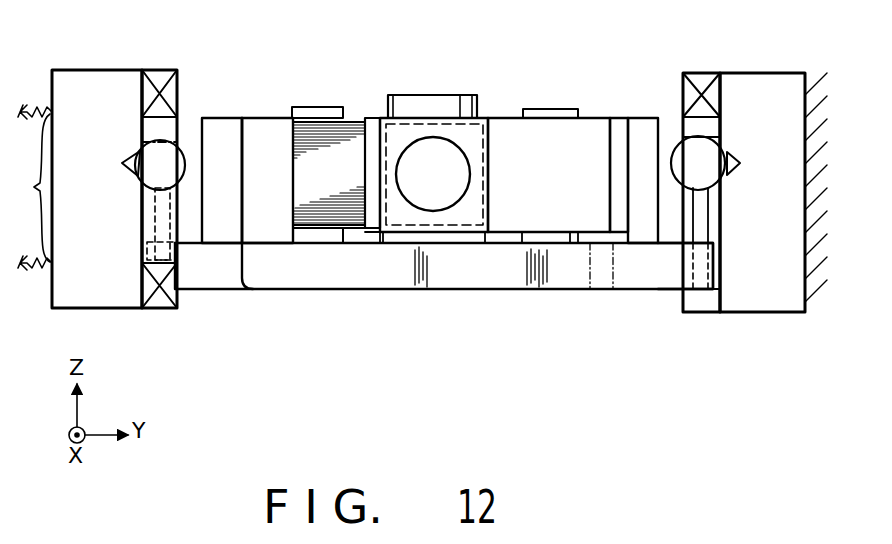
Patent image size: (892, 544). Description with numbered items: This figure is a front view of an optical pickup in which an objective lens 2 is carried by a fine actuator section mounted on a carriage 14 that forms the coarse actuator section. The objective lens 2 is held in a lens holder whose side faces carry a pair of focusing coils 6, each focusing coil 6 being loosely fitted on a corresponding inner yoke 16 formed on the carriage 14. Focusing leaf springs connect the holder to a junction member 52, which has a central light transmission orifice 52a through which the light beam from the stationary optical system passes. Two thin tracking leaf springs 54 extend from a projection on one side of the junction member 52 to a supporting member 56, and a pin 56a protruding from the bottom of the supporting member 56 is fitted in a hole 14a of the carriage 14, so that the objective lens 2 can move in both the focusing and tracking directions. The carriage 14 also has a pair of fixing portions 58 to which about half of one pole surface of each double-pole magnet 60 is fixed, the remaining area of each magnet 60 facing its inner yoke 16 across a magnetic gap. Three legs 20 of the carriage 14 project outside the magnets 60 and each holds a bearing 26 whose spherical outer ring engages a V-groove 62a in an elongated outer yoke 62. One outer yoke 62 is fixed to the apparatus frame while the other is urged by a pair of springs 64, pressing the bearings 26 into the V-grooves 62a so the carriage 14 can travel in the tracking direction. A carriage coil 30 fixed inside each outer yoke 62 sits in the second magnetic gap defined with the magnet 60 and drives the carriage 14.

The objective lens 2 is at (430, 95).
The focusing coil 6 is at (356, 118).
The carriage 14 is at (287, 278).
The hole 14a is at (588, 272).
The inner yoke 16 is at (325, 107).
The leg 20 is at (217, 277).
The bearing 26 is at (185, 153).
The carriage coil 30 is at (700, 80).
The junction member 52 is at (400, 220).
The light transmission orifice 52a is at (433, 202).
The tracking leaf spring 54 is at (502, 128).
The supporting member 56 is at (620, 123).
The pin 56a is at (603, 267).
The fixing portion 58 is at (281, 118).
The double-pole magnet 60 is at (230, 118).
The outer yoke 62 is at (113, 150).
The V-groove 62a is at (124, 170).
The spring 64 is at (29, 187).